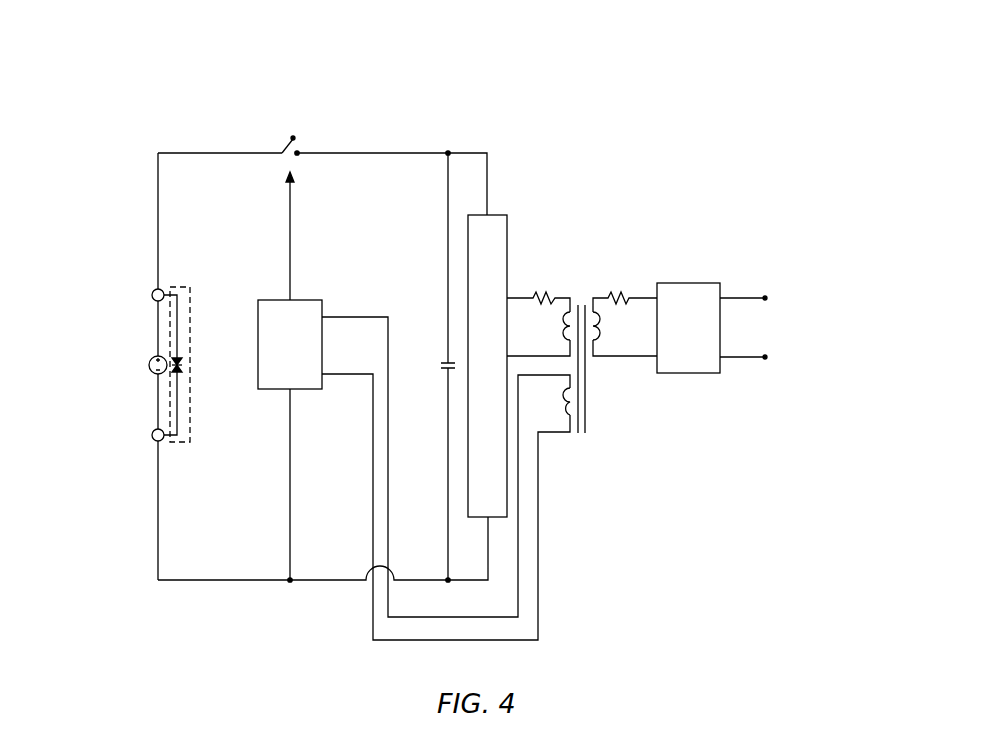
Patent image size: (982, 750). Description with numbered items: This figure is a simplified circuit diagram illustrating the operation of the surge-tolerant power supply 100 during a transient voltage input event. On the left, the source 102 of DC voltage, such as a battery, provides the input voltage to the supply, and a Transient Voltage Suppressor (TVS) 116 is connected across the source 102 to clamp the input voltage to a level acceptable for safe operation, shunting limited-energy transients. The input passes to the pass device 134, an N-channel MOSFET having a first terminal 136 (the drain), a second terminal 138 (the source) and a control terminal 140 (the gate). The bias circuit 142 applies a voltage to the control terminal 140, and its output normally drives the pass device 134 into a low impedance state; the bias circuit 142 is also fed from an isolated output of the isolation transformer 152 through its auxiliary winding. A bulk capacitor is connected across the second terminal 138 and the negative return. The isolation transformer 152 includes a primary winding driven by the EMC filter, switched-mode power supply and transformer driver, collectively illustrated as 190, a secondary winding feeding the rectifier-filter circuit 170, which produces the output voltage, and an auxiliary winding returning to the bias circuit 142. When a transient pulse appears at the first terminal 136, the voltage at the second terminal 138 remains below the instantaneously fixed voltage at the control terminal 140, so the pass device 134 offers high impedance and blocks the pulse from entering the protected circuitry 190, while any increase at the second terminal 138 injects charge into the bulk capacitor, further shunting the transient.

The surge-tolerant power supply 100 is at (468, 346).
The source 102 is at (108, 365).
The Transient Voltage Suppressor (TVS) 116 is at (178, 447).
The pass device 134 is at (298, 103).
The first terminal 136 is at (265, 151).
The second terminal 138 is at (322, 151).
The control terminal 140 is at (291, 197).
The bias circuit 142 is at (290, 344).
The isolation transformer 152 is at (580, 278).
The rectifier-filter circuit 170 is at (688, 328).
The EMC filter, SMPS, and transformer driver 190 is at (487, 366).